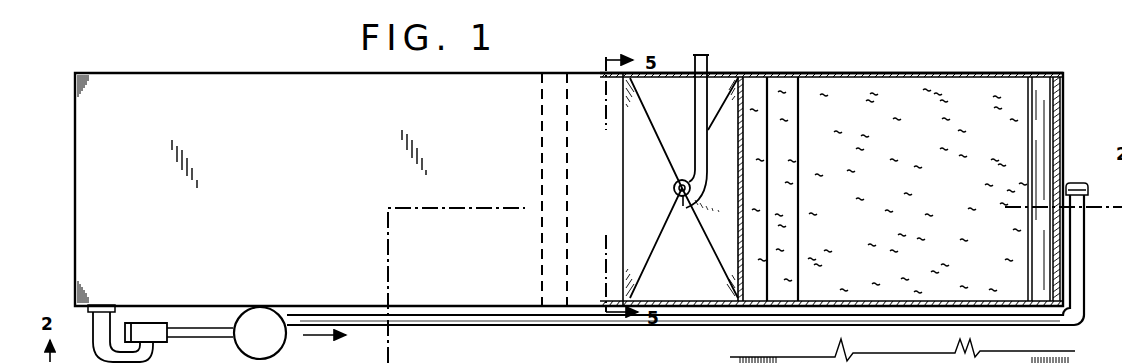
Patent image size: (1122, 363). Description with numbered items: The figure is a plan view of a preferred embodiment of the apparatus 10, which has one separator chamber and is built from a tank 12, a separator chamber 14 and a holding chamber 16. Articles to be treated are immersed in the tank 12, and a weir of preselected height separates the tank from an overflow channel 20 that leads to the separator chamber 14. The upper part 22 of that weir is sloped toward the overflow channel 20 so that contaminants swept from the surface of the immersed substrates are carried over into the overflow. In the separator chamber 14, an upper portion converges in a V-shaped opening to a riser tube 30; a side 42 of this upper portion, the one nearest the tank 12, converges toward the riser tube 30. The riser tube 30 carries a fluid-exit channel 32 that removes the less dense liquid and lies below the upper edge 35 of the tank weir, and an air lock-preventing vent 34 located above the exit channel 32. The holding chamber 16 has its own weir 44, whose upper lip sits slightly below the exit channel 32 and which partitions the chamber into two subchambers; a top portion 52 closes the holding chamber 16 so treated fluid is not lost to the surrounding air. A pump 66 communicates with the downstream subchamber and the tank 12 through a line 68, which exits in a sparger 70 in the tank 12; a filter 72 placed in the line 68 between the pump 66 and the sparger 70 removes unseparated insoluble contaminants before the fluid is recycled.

The apparatus 10 is at (313, 60).
The tank 12 is at (932, 75).
The separator chamber 14 is at (675, 76).
The holding chamber 16 is at (220, 98).
The overflow channel 20 is at (760, 276).
The upper part of weir 22 is at (790, 252).
The riser tube 30 is at (674, 189).
The exit channel 32 is at (706, 68).
The vent 34 is at (683, 206).
The upper edge of weir 35 is at (760, 100).
The side of upper portion 42 is at (737, 227).
The weir 44 is at (566, 196).
The top portion 52 is at (282, 192).
The pump 66 is at (148, 324).
The line 68 is at (470, 314).
The sparger 70 is at (1042, 132).
The filter 72 is at (274, 343).